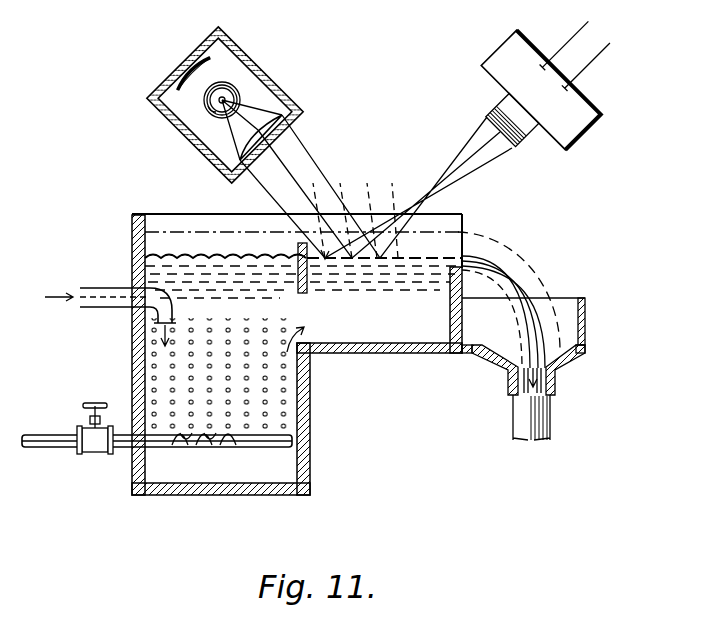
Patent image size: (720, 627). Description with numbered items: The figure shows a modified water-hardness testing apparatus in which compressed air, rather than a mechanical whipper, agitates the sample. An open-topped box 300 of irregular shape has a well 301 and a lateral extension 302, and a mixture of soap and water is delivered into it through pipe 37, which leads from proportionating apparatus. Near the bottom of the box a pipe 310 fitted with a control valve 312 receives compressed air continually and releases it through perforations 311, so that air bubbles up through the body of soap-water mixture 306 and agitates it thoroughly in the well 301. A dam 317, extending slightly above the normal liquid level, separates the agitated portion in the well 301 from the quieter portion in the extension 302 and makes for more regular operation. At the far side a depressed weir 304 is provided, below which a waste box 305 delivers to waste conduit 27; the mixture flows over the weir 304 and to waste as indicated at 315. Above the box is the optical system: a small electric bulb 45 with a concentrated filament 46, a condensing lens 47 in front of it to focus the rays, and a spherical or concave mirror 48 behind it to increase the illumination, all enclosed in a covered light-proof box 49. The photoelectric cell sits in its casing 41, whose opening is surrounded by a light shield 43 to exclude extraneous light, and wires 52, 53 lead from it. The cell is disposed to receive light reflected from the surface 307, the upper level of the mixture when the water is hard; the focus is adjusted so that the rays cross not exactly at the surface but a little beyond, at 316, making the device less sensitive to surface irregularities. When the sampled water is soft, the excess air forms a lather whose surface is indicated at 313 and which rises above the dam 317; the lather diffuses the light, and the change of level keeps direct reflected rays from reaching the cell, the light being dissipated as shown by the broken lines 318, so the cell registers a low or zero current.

The waste pipe 27 is at (552, 413).
The pipe 37 is at (112, 290).
The casing 41 is at (578, 136).
The light shield 43 is at (516, 142).
The electric bulb 45 is at (238, 96).
The concentrated filament 46 is at (205, 106).
The condensing lens 47 is at (283, 131).
The concave mirror 48 is at (207, 58).
The light-proof box 49 is at (247, 58).
The conductor 52 is at (564, 40).
The conductor 53 is at (599, 65).
The box 300 is at (311, 388).
The well 301 is at (288, 470).
The lateral extension 302 is at (401, 334).
The depressed weir 304 is at (478, 262).
The waste box 305 is at (584, 300).
The soap-water mixture 306 is at (309, 330).
The upper level 307 is at (320, 245).
The pipe 310 is at (130, 441).
The perforations 311 is at (202, 446).
The control valve 312 is at (103, 397).
The lather surface 313 is at (174, 224).
The waste flow 315 is at (522, 283).
The ray crossing point 316 is at (430, 209).
The dam 317 is at (300, 243).
The broken lines 318 is at (345, 195).